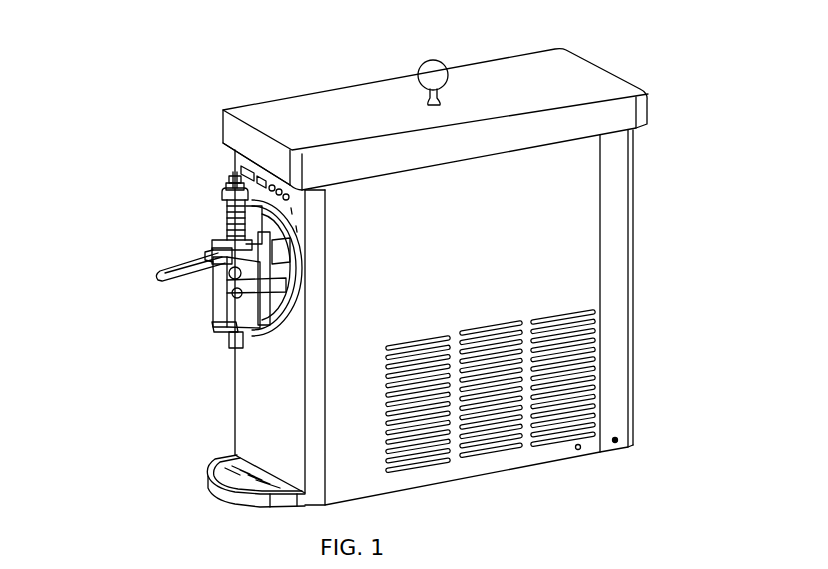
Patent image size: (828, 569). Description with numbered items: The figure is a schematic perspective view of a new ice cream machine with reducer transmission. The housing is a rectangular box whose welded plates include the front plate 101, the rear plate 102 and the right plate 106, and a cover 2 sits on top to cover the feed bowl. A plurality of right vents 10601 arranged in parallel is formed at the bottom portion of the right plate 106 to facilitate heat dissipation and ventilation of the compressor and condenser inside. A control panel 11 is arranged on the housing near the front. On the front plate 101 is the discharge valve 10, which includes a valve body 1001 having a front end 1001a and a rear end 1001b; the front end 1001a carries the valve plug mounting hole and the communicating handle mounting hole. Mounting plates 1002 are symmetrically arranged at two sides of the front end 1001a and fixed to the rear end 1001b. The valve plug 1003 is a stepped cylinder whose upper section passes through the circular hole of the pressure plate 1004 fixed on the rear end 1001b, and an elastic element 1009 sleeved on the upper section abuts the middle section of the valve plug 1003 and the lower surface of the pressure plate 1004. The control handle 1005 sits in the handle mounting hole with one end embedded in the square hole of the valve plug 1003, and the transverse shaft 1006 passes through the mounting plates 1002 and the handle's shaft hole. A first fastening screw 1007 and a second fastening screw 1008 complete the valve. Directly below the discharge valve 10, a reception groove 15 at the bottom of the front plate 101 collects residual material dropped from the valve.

The cover 2 is at (518, 78).
The control panel 11 is at (283, 147).
The discharge valve 10 is at (75, 333).
The pressure plate 1004 is at (236, 182).
The valve plug 1003 is at (242, 182).
The first fastening screw 1007 is at (227, 197).
The elastic element 1009 is at (230, 217).
The second fastening screw 1008 is at (222, 240).
The mounting plates 1002 is at (187, 257).
The control handle 1005 is at (160, 277).
The transverse shaft 1006 is at (207, 280).
The valve body 1001 is at (122, 330).
The front end 1001a is at (220, 323).
The rear end 1001b is at (235, 347).
The front plate 101 is at (267, 437).
The reception groove 15 is at (235, 453).
The right plate 106 is at (553, 213).
The right vents 10601 is at (543, 390).
The rear plate 102 is at (636, 327).